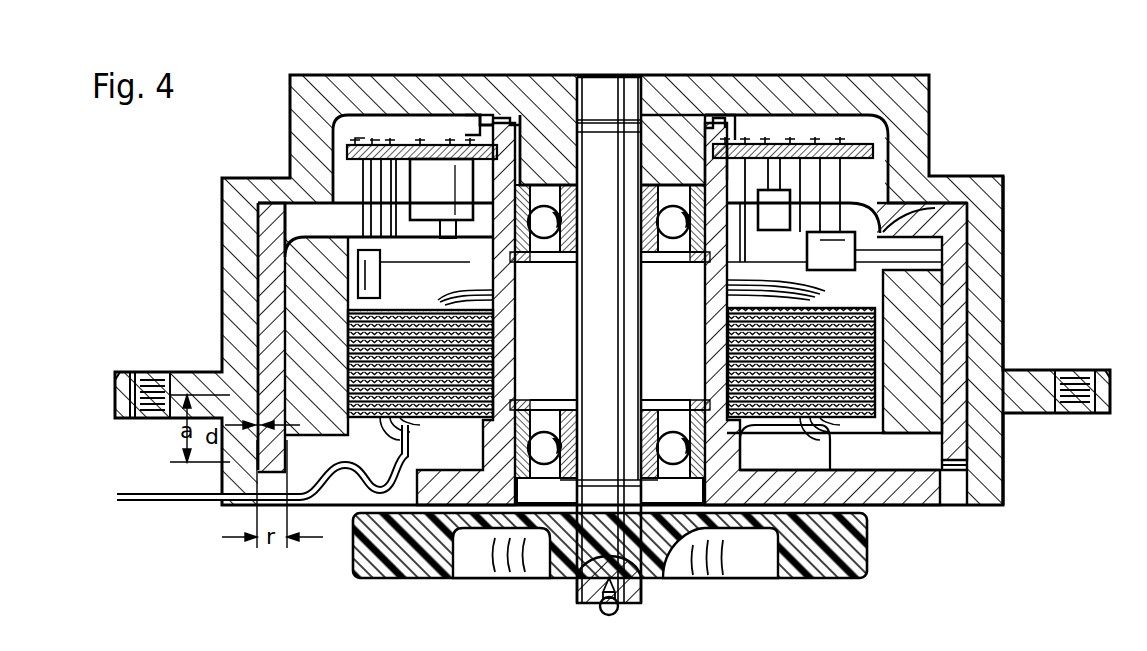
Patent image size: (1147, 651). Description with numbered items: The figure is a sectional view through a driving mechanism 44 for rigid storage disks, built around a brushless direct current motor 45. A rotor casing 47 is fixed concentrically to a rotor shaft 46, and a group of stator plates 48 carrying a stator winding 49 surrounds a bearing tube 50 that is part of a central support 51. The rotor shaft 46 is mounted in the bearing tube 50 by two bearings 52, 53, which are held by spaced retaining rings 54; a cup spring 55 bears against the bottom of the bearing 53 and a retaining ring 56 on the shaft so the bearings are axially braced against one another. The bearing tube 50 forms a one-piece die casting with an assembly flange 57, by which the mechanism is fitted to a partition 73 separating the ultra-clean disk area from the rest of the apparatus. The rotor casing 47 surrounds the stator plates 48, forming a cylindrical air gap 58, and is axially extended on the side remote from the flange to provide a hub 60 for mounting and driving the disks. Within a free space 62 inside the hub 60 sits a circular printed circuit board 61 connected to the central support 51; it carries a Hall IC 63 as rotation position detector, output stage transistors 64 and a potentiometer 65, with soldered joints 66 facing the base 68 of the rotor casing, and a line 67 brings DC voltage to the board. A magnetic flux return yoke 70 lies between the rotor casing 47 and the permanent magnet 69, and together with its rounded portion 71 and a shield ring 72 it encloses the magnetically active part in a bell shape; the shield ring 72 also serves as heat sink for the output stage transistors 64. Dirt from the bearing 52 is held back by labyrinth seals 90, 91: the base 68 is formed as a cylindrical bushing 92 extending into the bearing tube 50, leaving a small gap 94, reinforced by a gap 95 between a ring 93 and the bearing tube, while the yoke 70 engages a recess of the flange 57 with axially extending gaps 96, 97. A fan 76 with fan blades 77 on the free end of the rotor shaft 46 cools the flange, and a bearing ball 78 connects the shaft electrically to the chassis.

The driving mechanism 44 is at (1012, 196).
The brushless direct current motor 45 is at (1008, 234).
The rotor shaft 46 is at (641, 600).
The rotor casing 47 is at (975, 319).
The stator plates 48 is at (346, 320).
The stator winding 49 is at (880, 505).
The bearing tube 50 is at (512, 336).
The central support 51 is at (716, 115).
The bearing 52 is at (548, 252).
The bearing 53 is at (548, 412).
The retaining rings 54 is at (690, 252).
The cup spring 55 is at (677, 576).
The retaining ring 56 is at (577, 500).
The assembly flange 57 is at (978, 505).
The cylindrical air gap 58 is at (885, 325).
The hub 60 is at (902, 108).
The printed circuit board 61 is at (806, 140).
The free space 62 is at (340, 160).
The Hall IC 63 is at (318, 268).
The output stage transistors 64 is at (860, 255).
The potentiometer 65 is at (440, 190).
The soldered joints 66 is at (428, 140).
The line 67 is at (160, 503).
The base 68 is at (373, 80).
The permanent magnet 69 is at (915, 286).
The magnetic flux return yoke 70 is at (268, 295).
The rounded portion 71 is at (920, 222).
The shield ring 72 is at (396, 270).
The partition 73 is at (125, 378).
The fan 76 is at (355, 555).
The fan blades 77 is at (420, 578).
The bearing ball 78 is at (603, 612).
The labyrinth seal 90 is at (500, 115).
The labyrinth seal 91 is at (968, 467).
The cylindrical bushing 92 is at (667, 115).
The ring 93 is at (475, 128).
The gap 94 is at (710, 140).
The gap 95 is at (720, 115).
The gap 96 is at (937, 465).
The gap 97 is at (965, 445).